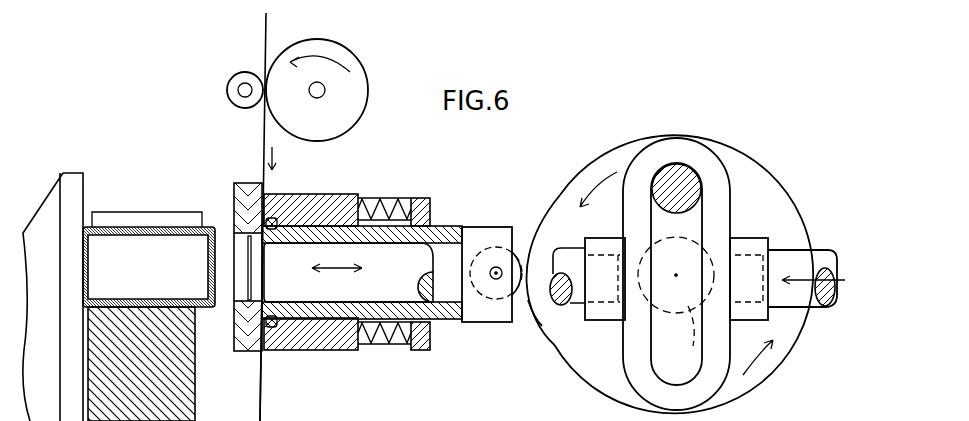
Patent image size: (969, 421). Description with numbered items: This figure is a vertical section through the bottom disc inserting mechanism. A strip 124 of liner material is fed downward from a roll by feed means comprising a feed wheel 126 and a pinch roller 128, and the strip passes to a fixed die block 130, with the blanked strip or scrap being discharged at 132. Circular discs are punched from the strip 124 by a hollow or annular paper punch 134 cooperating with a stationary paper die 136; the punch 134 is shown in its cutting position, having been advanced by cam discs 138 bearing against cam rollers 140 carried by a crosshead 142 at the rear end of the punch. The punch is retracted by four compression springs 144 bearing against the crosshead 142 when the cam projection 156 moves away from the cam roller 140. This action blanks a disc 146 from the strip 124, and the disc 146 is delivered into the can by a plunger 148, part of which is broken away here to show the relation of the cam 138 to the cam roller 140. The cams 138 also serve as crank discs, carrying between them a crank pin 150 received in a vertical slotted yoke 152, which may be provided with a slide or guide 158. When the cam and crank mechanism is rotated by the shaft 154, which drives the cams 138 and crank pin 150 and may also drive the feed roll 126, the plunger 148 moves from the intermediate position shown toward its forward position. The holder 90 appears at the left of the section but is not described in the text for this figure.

The holder 90 is at (140, 223).
The strip 124 is at (267, 30).
The feed wheel 126 is at (354, 52).
The pinch roller 128 is at (232, 103).
The fixed die block 130 is at (322, 194).
The scrap discharge 132 is at (262, 403).
The paper punch 134 is at (270, 249).
The paper die 136 is at (322, 253).
The cam disc 138 is at (593, 173).
The cam roller 140 is at (550, 216).
The crosshead 142 is at (453, 226).
The compression spring 144 is at (390, 198).
The disc 146 is at (275, 286).
The plunger 148 is at (440, 293).
The crank pin 150 is at (697, 176).
The slotted yoke 152 is at (680, 141).
The shaft 154 is at (694, 338).
The cam projection 156 is at (532, 305).
The slide or guide 158 is at (790, 248).